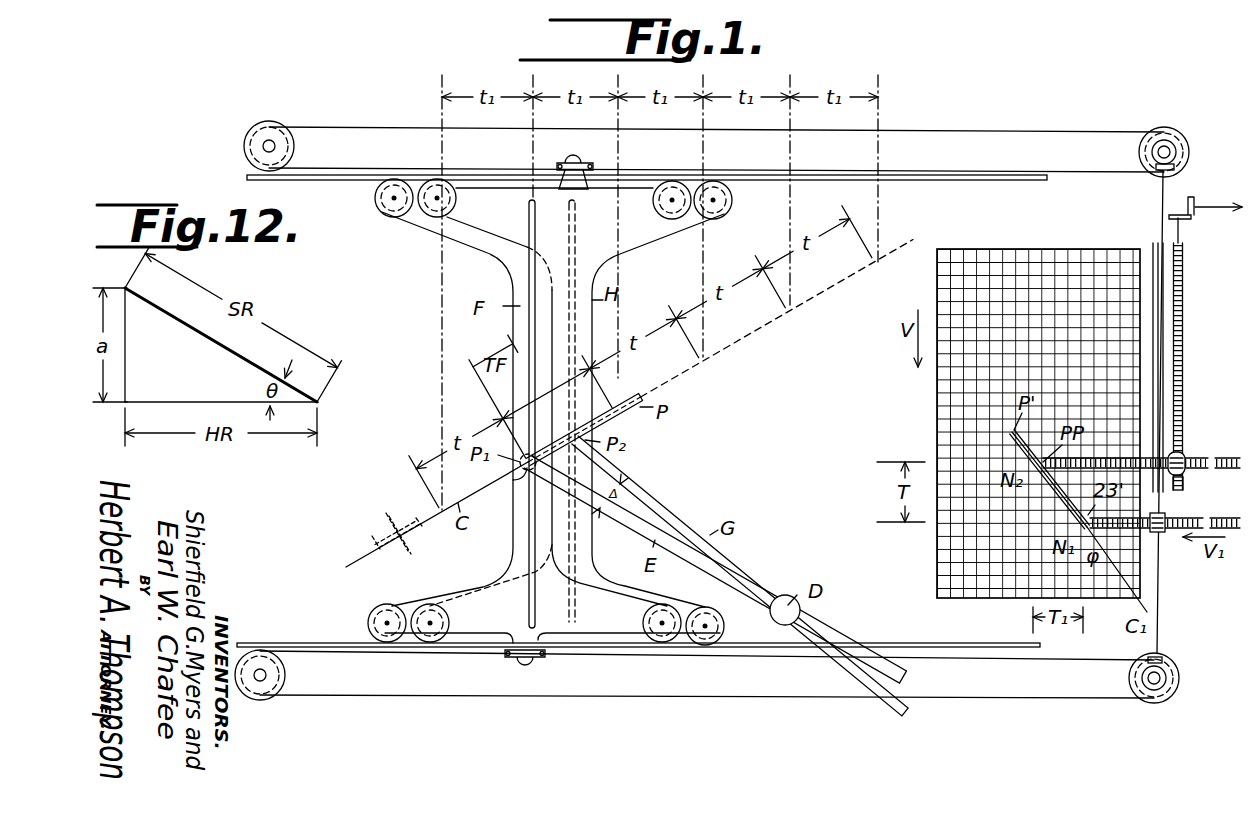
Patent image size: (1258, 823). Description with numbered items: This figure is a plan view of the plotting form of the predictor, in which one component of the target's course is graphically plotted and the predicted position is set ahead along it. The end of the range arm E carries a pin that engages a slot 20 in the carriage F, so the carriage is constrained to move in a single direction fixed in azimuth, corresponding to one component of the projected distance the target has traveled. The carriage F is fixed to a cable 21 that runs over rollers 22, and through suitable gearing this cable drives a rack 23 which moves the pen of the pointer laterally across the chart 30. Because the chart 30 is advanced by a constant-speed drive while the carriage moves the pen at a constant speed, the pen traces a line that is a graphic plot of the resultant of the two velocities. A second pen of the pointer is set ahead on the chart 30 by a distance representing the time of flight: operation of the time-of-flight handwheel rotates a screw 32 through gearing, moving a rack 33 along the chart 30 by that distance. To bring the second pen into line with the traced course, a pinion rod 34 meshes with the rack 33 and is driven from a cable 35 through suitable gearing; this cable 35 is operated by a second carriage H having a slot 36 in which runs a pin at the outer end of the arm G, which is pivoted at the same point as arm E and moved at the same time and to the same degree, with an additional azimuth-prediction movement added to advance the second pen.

The slot 20 is at (528, 270).
The cable 21 is at (705, 658).
The rollers 22 is at (1150, 710).
The rack 23 is at (1187, 523).
The chart 30 is at (1038, 423).
The screw 32 is at (1184, 345).
The rack 33 is at (1202, 462).
The pinion rod 34 is at (1154, 247).
The cable 35 is at (962, 128).
The slot 36 is at (573, 325).